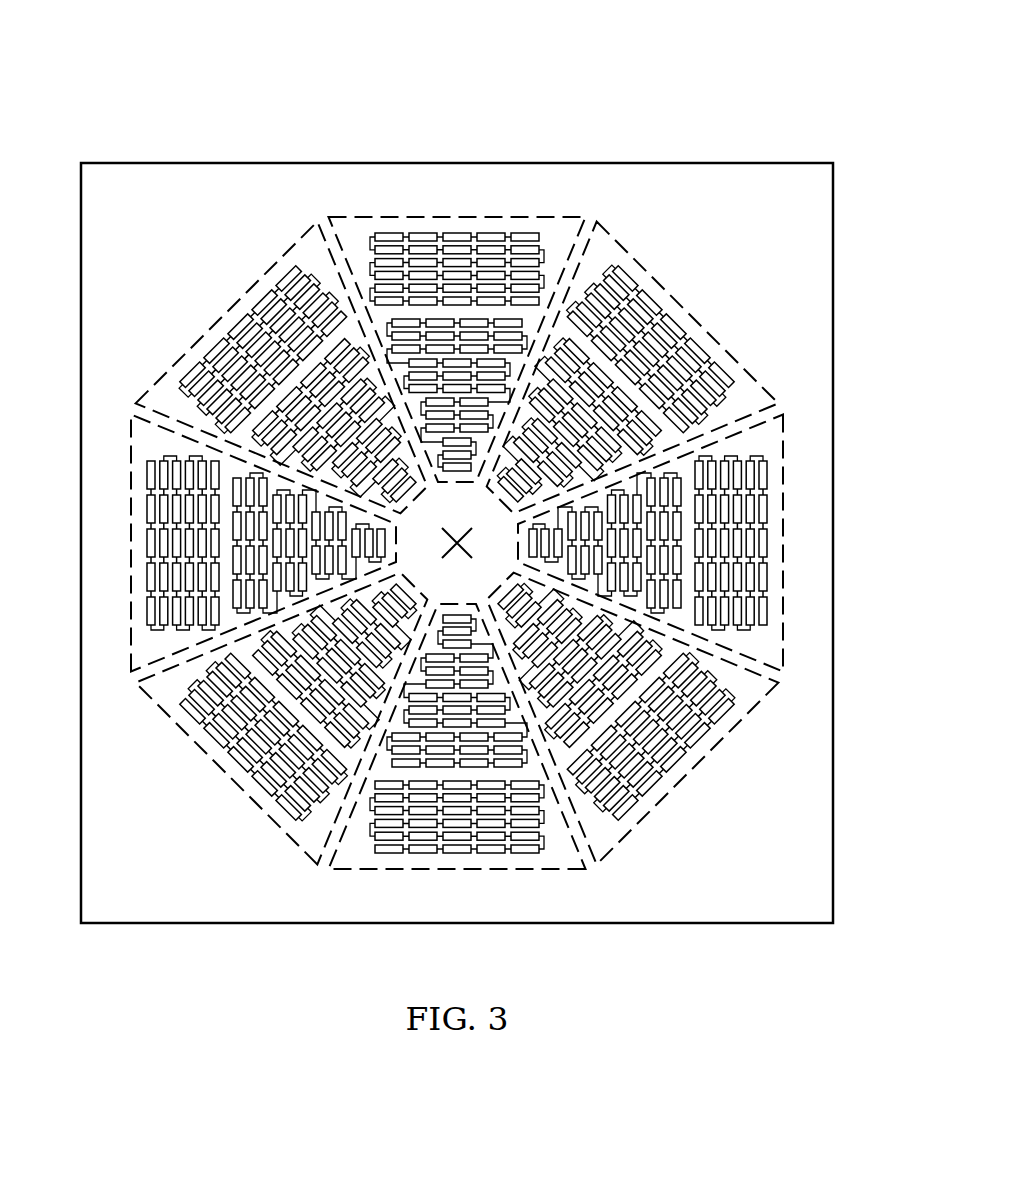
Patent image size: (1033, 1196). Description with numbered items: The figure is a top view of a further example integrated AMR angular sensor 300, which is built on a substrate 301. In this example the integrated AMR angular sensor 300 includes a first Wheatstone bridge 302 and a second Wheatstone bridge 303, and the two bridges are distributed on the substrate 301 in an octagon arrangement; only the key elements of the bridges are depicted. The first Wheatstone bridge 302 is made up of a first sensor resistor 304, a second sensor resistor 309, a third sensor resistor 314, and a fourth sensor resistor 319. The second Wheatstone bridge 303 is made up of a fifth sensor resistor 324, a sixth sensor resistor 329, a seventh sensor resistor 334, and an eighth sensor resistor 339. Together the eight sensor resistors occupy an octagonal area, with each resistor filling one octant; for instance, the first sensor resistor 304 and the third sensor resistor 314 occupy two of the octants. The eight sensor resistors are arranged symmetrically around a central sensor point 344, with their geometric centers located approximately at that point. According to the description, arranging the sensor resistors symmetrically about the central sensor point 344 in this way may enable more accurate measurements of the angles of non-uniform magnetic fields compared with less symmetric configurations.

The integrated AMR angular sensor 300 is at (457, 499).
The substrate 301 is at (213, 925).
The first Wheatstone bridge 302 is at (407, 213).
The second Wheatstone bridge 303 is at (262, 273).
The first sensor resistor 304 is at (457, 213).
The third sensor resistor 314 is at (511, 213).
The second sensor resistor 309 is at (128, 545).
The fourth sensor resistor 319 is at (128, 594).
The fifth sensor resistor 324 is at (689, 310).
The seventh sensor resistor 334 is at (728, 347).
The sixth sensor resistor 329 is at (222, 310).
The eighth sensor resistor 339 is at (189, 347).
The central sensor point 344 is at (453, 531).